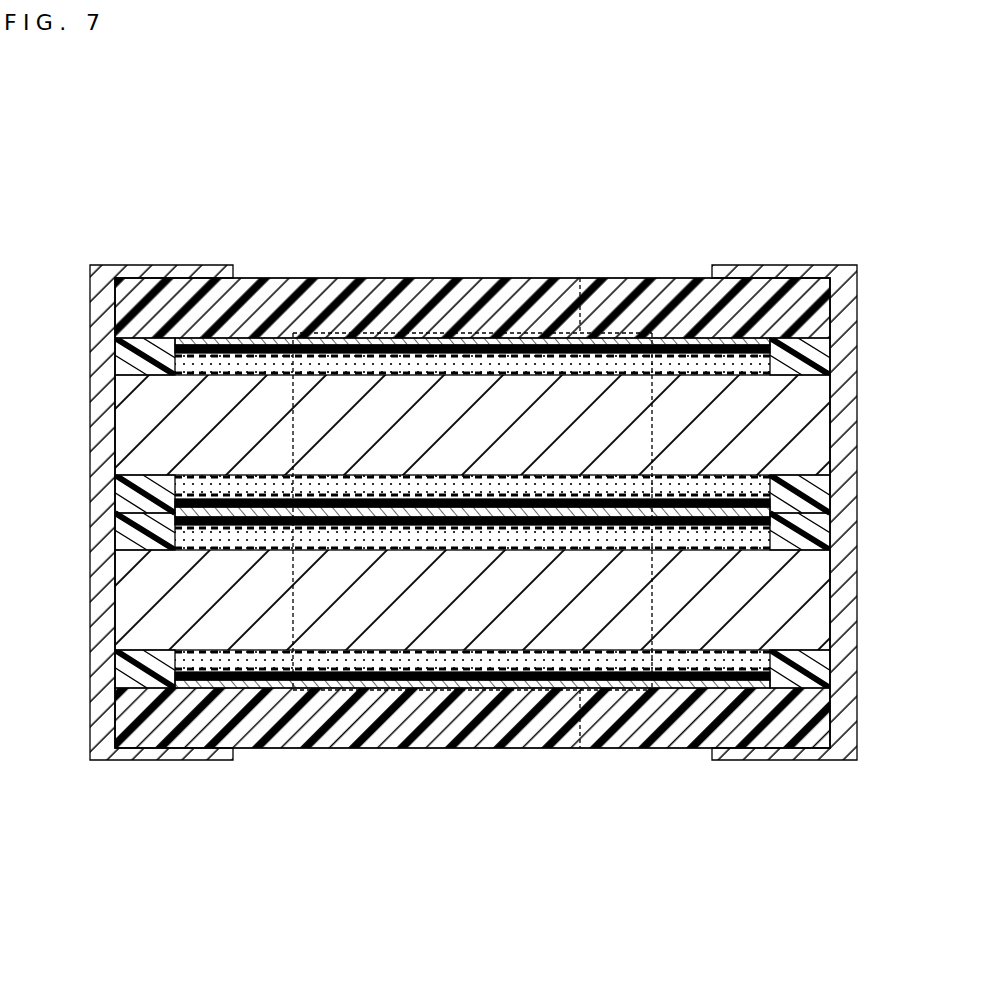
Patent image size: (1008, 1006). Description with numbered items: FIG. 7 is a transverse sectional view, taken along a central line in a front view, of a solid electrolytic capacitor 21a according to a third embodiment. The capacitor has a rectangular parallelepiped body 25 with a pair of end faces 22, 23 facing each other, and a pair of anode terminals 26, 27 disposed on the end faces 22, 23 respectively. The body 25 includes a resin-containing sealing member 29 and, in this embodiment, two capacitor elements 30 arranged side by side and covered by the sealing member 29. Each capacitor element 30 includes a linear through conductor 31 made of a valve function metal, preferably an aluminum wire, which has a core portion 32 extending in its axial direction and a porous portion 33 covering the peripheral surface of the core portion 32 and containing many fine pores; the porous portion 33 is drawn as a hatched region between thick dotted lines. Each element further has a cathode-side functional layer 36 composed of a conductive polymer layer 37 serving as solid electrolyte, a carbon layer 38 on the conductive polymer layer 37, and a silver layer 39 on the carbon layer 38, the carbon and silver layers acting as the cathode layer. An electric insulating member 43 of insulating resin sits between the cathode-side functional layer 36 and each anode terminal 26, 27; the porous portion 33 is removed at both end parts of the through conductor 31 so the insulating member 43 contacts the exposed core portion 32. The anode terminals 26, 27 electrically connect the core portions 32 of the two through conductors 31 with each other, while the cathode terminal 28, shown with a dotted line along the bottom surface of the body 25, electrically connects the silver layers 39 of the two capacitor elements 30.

The solid electrolytic capacitor 21a is at (481, 149).
The end face 22 is at (112, 303).
The end face 23 is at (836, 306).
The body 25 is at (636, 274).
The anode terminal 26 is at (97, 482).
The anode terminal 27 is at (850, 488).
The cathode terminal 28 is at (653, 605).
The sealing member 29 is at (298, 738).
The capacitor element 30 is at (469, 331).
The through conductor 31 is at (270, 212).
The core portion 32 is at (392, 392).
The porous portion 33 is at (259, 355).
The cathode-side functional layer 36 is at (420, 333).
The conductive polymer layer 37 is at (515, 357).
The carbon layer 38 is at (548, 350).
The silver layer 39 is at (592, 347).
The electric insulating member 43 is at (786, 342).